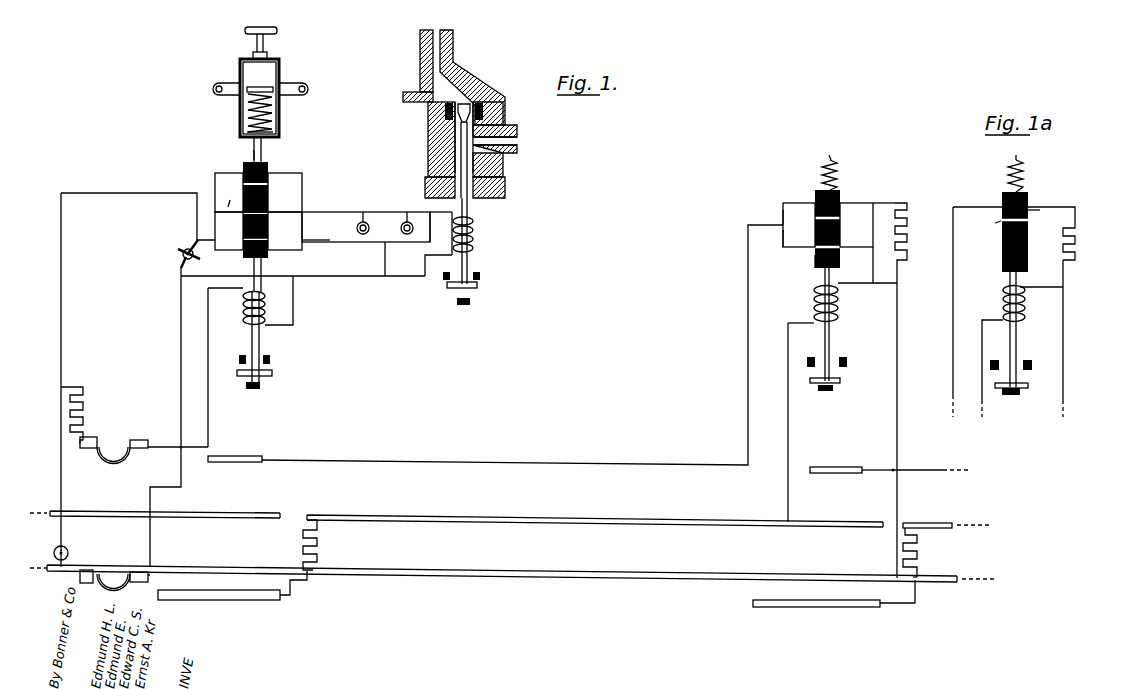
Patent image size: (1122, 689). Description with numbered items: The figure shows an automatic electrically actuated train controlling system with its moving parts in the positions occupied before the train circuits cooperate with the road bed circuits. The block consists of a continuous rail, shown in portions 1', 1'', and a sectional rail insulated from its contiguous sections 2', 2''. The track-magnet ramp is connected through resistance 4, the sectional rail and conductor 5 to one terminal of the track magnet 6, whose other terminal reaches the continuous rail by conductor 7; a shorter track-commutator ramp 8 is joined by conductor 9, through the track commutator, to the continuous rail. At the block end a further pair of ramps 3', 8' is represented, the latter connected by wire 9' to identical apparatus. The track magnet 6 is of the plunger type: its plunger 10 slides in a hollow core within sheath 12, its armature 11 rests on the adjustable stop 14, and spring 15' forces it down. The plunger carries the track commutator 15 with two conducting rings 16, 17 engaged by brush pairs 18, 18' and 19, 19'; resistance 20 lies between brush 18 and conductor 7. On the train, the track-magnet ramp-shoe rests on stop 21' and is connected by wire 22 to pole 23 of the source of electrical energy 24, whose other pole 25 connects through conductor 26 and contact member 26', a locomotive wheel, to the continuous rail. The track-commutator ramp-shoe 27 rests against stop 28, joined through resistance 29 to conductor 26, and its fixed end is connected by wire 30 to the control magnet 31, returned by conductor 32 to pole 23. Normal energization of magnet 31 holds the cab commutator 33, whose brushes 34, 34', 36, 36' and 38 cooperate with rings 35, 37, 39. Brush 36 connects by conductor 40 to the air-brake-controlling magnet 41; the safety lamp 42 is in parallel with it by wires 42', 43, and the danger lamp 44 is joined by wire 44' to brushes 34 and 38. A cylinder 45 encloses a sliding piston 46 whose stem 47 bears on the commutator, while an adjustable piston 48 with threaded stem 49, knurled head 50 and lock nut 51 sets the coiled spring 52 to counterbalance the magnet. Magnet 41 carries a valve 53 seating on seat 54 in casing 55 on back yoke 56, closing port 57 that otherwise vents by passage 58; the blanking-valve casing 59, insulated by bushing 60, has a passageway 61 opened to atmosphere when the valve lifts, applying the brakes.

In FIG. 1, the rail conductor 1' is at (512, 578).
In FIG. 1, the conductor 1'' is at (929, 562).
In FIG. 1, the sectional rail section 2' is at (456, 526).
In FIG. 1, the sectional rail section 2'' is at (946, 550).
In FIG. 1, the ramp 3' is at (536, 596).
In FIG. 1, the resistance 4 is at (318, 542).
In FIG. 1, the conductor 5 is at (789, 440).
In FIG. 1a, the conductor 5 is at (981, 350).
In FIG. 1, the track magnet 6 is at (838, 312).
In FIG. 1a, the track magnet 6 is at (1026, 310).
In FIG. 1, the conductor 7 is at (896, 402).
In FIG. 1a, the conductor 7 is at (1064, 330).
In FIG. 1, the track-commutator ramp 8 is at (235, 450).
In FIG. 1, the ramp 8' is at (851, 460).
In FIG. 1, the conductor 9 is at (522, 345).
In FIG. 1a, the conductor 9 is at (941, 312).
In FIG. 1, the wire 9' is at (930, 460).
In FIG. 1, the plunger 10 is at (261, 340).
In FIG. 1, the armature 11 is at (273, 375).
In FIG. 1a, the armature 11 is at (1029, 388).
In FIG. 1, the sheath 12 is at (271, 360).
In FIG. 1a, the sheath 12 is at (1033, 366).
In FIG. 1, the adjustable stop 14 is at (258, 390).
In FIG. 1a, the adjustable stop 14 is at (1010, 396).
In FIG. 1, the track commutator 15 is at (840, 229).
In FIG. 1a, the track commutator 15 is at (1030, 228).
In FIG. 1, the spring 15' is at (845, 172).
In FIG. 1a, the spring 15' is at (1030, 173).
In FIG. 1, the conducting ring 16 is at (794, 217).
In FIG. 1a, the conducting ring 16 is at (995, 223).
In FIG. 1, the conducting ring 17 is at (812, 258).
In FIG. 1, the brush 18 is at (867, 214).
In FIG. 1a, the brush 18 is at (1039, 217).
In FIG. 1, the brush 18' is at (798, 210).
In FIG. 1a, the brush 18' is at (1014, 201).
In FIG. 1, the brush 19 is at (871, 265).
In FIG. 1, the brush 19' is at (795, 237).
In FIG. 1, the resistance 20 is at (908, 236).
In FIG. 1a, the resistance 20 is at (1076, 260).
In FIG. 1, the stop 21' is at (115, 570).
In FIG. 1, the wire 22 is at (180, 368).
In FIG. 1, the pole 23 is at (197, 261).
In FIG. 1, the source of electrical energy 24 is at (183, 254).
In FIG. 1, the pole 25 is at (190, 240).
In FIG. 1, the conductor 26 is at (138, 380).
In FIG. 1, the contact member 26' is at (75, 548).
In FIG. 1, the track-commutator ramp-shoe 27 is at (113, 462).
In FIG. 1, the stop 28 is at (97, 440).
In FIG. 1, the resistance 29 is at (85, 400).
In FIG. 1, the wire 30 is at (209, 435).
In FIG. 1, the control magnet 31 is at (267, 302).
In FIG. 1, the conductor 32 is at (263, 272).
In FIG. 1, the cab commutator 33 is at (269, 165).
In FIG. 1, the brush 34 is at (300, 209).
In FIG. 1, the brush 34' is at (215, 201).
In FIG. 1, the ring 35 is at (270, 190).
In FIG. 1, the brush 36 is at (269, 203).
In FIG. 1, the brush 36' is at (227, 197).
In FIG. 1, the ring 37 is at (270, 222).
In FIG. 1, the brush 38 is at (270, 245).
In FIG. 1, the ring 39 is at (292, 233).
In FIG. 1, the conductor 40 is at (370, 207).
In FIG. 1, the air-brake-controlling magnet 41 is at (475, 233).
In FIG. 1, the safety signal lamp 42 is at (395, 223).
In FIG. 1, the wire 42' is at (442, 227).
In FIG. 1, the wire 43 is at (386, 258).
In FIG. 1, the danger signal lamp 44 is at (353, 223).
In FIG. 1, the wire 44' is at (323, 246).
In FIG. 1, the cylinder 45 is at (295, 82).
In FIG. 1, the sliding piston 46 is at (264, 146).
In FIG. 1, the stem 47 is at (251, 155).
In FIG. 1, the adjustable piston 48 is at (274, 106).
In FIG. 1, the stem 49 is at (280, 70).
In FIG. 1, the knurled head 50 is at (278, 30).
In FIG. 1, the lock nut 51 is at (268, 55).
In FIG. 1, the coiled spring 52 is at (274, 123).
In FIG. 1, the valve 53 is at (518, 130).
In FIG. 1, the seat 54 is at (500, 112).
In FIG. 1, the valve casing 55 is at (427, 152).
In FIG. 1, the back yoke 56 is at (506, 190).
In FIG. 1, the port 57 is at (468, 108).
In FIG. 1, the passage 58 is at (518, 142).
In FIG. 1, the blanking valve casing 59 is at (419, 64).
In FIG. 1, the bushing 60 is at (427, 130).
In FIG. 1, the passageway 61 is at (402, 84).